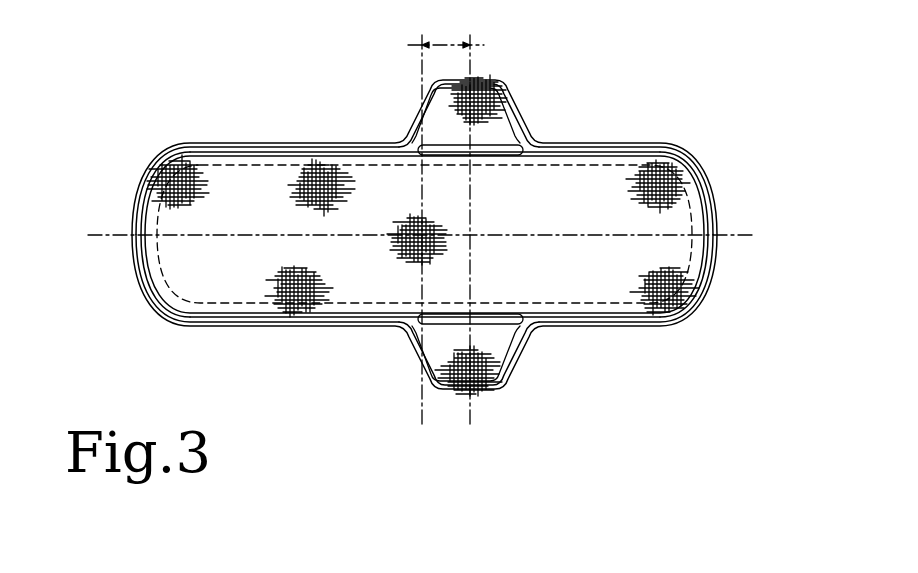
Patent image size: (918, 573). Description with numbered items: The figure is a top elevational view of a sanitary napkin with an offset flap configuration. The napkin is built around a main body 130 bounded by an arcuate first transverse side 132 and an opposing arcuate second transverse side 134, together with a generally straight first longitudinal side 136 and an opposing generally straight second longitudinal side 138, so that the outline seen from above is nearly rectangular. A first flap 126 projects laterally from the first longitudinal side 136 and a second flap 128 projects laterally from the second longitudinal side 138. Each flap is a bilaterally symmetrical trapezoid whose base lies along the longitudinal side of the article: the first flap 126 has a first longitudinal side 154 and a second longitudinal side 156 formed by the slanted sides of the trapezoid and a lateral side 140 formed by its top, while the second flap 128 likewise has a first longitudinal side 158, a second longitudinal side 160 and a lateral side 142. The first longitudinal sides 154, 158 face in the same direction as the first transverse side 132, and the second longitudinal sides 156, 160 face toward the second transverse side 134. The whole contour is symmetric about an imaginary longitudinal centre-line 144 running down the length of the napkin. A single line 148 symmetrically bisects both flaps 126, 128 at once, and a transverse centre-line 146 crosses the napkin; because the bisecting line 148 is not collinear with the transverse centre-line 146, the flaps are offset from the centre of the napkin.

The first flap 126 is at (520, 88).
The second flap 128 is at (518, 383).
The main body 130 is at (298, 340).
The first transverse side 132 is at (722, 185).
The second transverse side 134 is at (125, 220).
The first longitudinal side 136 is at (278, 140).
The second longitudinal side 138 is at (634, 330).
The lateral side of first flap 140 is at (487, 80).
The lateral side of second flap 142 is at (492, 391).
The longitudinal centre-line 144 is at (437, 235).
The transverse centre-line 146 is at (445, 229).
The flap bisecting line 148 is at (468, 229).
The first longitudinal side of first flap 154 is at (522, 104).
The second longitudinal side of first flap 156 is at (418, 119).
The first longitudinal side of second flap 158 is at (520, 355).
The second longitudinal side of second flap 160 is at (420, 347).